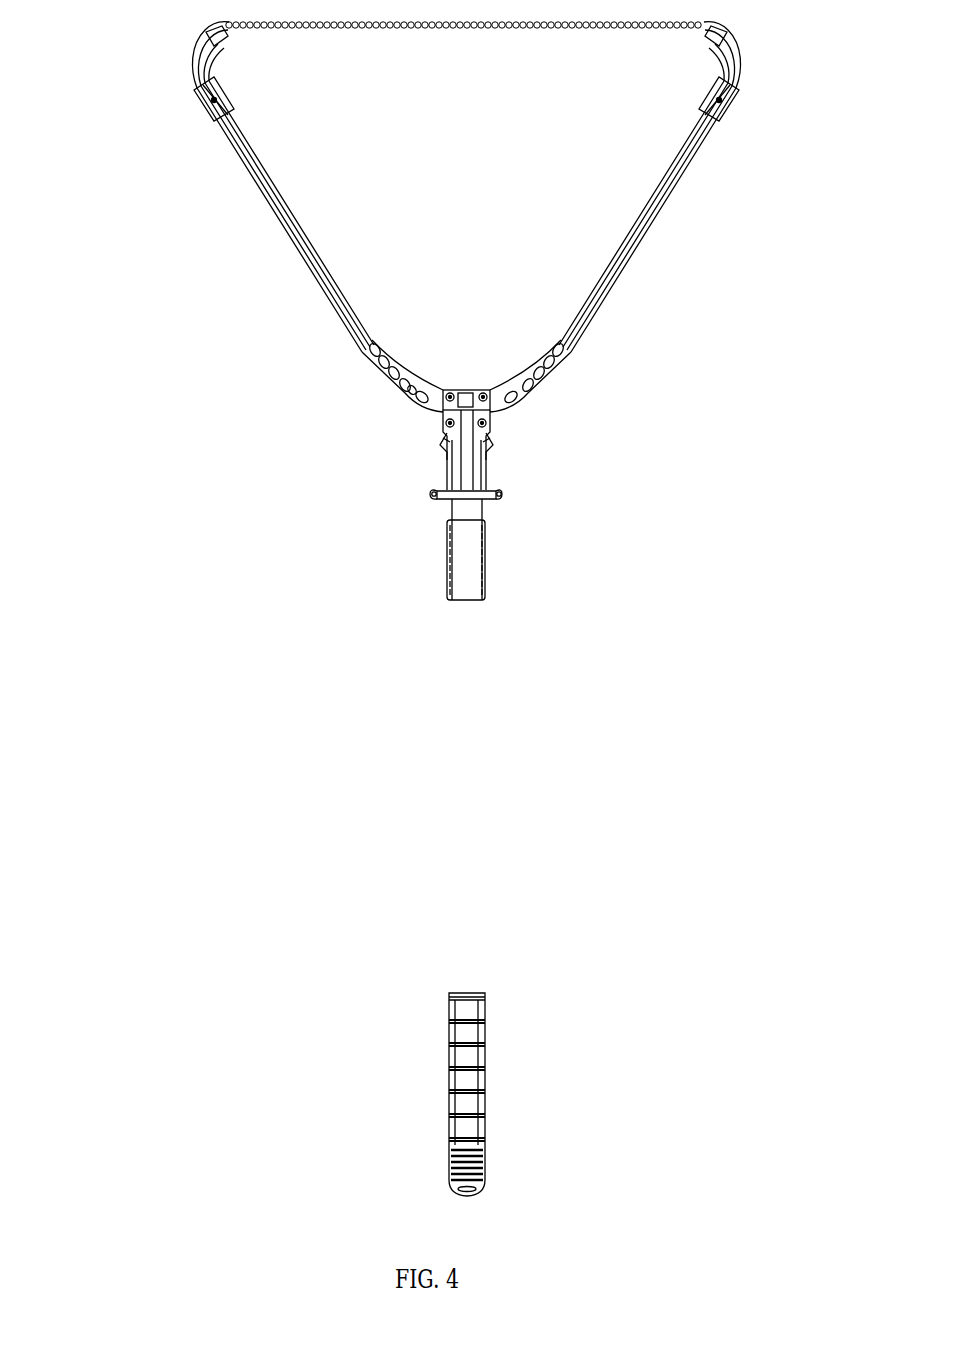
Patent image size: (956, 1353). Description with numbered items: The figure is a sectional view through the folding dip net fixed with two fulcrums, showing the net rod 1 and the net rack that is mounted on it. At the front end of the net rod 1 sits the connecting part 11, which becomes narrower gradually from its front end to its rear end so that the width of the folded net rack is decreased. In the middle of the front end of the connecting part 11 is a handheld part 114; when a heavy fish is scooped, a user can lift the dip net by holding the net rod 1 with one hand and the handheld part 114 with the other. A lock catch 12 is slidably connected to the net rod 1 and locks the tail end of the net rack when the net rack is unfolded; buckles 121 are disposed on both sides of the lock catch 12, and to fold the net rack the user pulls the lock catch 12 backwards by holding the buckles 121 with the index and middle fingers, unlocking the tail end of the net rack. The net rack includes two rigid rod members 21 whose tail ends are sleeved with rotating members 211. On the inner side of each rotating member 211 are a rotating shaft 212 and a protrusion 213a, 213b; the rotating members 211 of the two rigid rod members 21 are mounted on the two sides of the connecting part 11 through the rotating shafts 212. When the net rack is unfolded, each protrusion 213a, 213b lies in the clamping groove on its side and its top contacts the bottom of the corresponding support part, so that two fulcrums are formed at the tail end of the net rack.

The net rod 1 is at (482, 761).
The connecting part 11 is at (495, 437).
The handheld part 114 is at (485, 387).
The lock catch 12 is at (490, 478).
The buckle 121 is at (497, 500).
The rigid rod member 21 is at (297, 237).
The rotating member 211 is at (395, 395).
The rotating shaft 212 is at (428, 422).
The protrusion 213a is at (443, 447).
The protrusion 213b is at (490, 437).